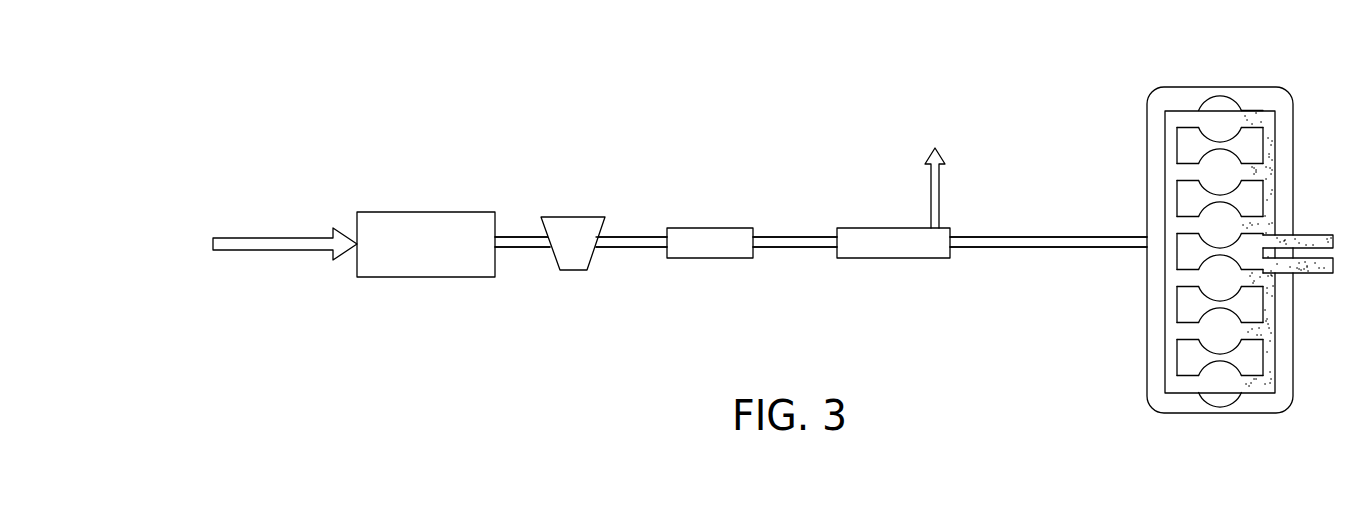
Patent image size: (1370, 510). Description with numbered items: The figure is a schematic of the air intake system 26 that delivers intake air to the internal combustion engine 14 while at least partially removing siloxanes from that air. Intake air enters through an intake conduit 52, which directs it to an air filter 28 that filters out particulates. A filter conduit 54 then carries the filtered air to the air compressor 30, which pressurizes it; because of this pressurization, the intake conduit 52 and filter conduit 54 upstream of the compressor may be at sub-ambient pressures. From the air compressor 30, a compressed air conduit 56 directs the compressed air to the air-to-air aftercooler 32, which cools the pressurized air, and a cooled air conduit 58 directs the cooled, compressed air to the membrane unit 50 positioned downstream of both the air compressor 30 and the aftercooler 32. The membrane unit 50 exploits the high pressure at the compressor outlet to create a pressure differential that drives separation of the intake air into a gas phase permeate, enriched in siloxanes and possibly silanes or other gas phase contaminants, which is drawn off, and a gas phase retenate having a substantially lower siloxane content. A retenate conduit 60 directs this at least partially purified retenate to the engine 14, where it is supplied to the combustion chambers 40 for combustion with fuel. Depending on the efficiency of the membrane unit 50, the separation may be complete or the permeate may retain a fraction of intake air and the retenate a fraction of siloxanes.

The internal combustion engine 14 is at (1256, 225).
The air intake system 26 is at (793, 130).
The air filter 28 is at (447, 212).
The air compressor 30 is at (573, 217).
The air-to-air aftercooler (ATAAC) 32 is at (710, 228).
The combustion chambers 40 is at (1228, 340).
The membrane unit 50 is at (893, 228).
The intake conduit 52 is at (313, 252).
The filter conduit 54 is at (518, 248).
The compressed air conduit 56 is at (637, 248).
The cooled air conduit 58 is at (795, 248).
The retenate conduit 60 is at (1023, 248).